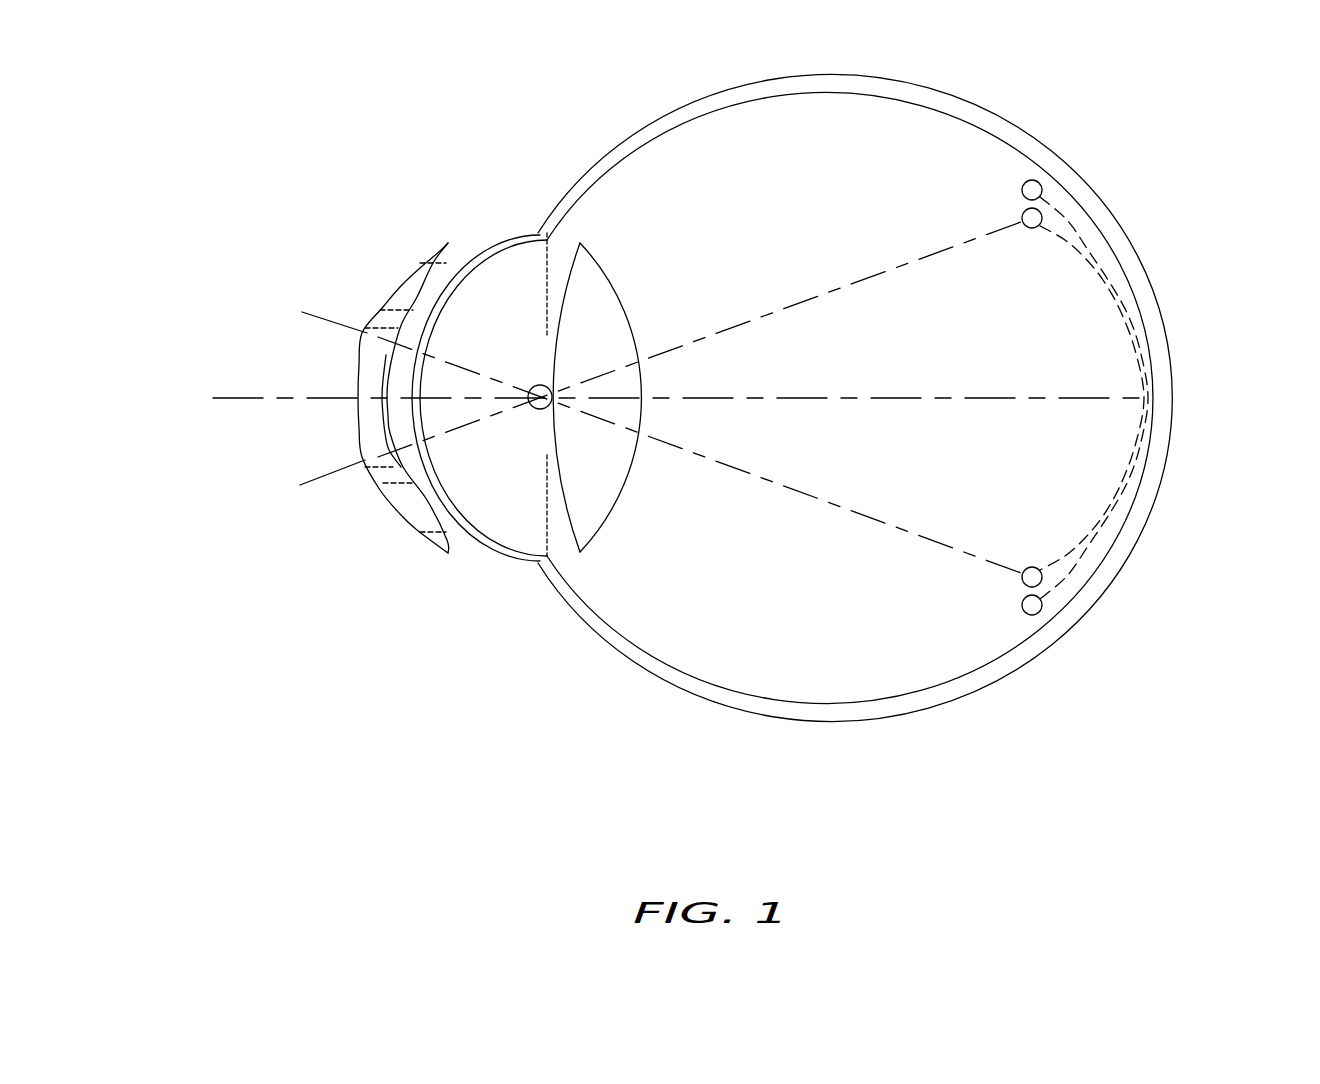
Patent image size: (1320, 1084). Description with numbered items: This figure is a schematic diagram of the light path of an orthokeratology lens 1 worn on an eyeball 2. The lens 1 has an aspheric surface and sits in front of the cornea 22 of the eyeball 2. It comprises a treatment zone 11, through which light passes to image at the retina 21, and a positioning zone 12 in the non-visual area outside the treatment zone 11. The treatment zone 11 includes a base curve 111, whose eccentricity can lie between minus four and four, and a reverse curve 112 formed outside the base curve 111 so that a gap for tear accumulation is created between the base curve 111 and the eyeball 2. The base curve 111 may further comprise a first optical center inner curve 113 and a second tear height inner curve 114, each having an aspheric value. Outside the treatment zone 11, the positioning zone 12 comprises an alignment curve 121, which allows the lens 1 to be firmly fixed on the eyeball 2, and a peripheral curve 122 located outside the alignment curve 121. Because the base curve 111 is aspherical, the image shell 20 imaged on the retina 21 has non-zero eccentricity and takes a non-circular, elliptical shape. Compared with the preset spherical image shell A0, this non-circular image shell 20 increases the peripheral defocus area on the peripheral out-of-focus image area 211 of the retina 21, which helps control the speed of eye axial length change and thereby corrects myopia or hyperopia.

The lens 1 is at (347, 350).
The treatment zone 11 is at (250, 291).
The base curve 111 is at (373, 372).
The reverse curve 112 is at (397, 320).
The first optical center inner curve 113 is at (383, 408).
The second tear height inner curve 114 is at (363, 452).
The positioning zone 12 is at (333, 205).
The alignment curve 121 is at (412, 293).
The peripheral curve 122 is at (443, 253).
The eyeball 2 is at (1105, 155).
The image shell 20 is at (1107, 529).
The retina 21 is at (1110, 245).
The peripheral out-of-focus image area 211 is at (1115, 553).
The cornea 22 is at (400, 466).
The preset spherical image shell A0 is at (1070, 216).